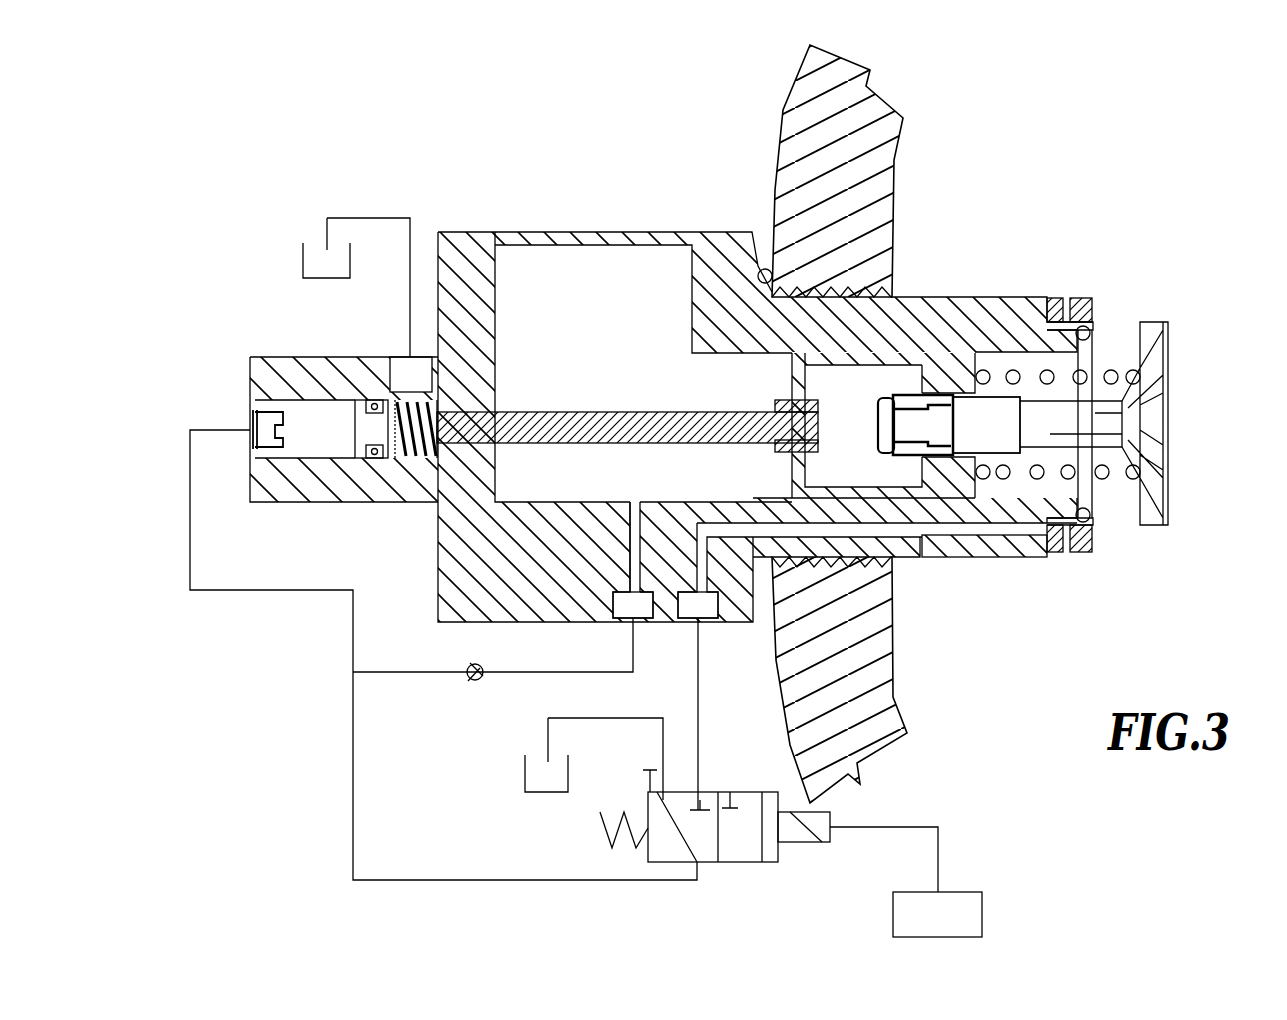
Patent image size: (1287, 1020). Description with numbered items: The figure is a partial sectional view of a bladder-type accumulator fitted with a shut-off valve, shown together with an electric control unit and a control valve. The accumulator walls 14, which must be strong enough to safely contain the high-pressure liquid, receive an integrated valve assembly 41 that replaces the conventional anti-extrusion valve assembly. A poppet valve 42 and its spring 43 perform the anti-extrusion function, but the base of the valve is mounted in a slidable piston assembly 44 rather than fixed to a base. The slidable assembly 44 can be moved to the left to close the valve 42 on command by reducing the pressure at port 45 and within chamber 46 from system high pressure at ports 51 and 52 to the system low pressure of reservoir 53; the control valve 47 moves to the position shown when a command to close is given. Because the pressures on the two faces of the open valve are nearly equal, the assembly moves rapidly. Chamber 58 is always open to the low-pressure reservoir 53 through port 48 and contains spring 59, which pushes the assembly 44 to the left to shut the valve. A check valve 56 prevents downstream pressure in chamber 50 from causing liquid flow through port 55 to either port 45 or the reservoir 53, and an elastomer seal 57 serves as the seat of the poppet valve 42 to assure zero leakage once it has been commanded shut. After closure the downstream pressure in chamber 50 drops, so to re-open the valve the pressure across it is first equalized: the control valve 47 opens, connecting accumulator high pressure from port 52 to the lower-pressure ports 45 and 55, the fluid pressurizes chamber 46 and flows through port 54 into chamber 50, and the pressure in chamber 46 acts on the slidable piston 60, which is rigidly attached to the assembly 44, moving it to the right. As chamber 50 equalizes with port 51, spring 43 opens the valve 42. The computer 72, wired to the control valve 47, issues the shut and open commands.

The accumulator walls 14 is at (776, 116).
The integrated valve assembly 41 is at (757, 232).
The poppet valve 42 is at (1160, 420).
The spring 43 is at (1113, 370).
The slidable piston assembly 44 is at (945, 352).
The port 45 is at (246, 424).
The chamber 46 is at (318, 408).
The control valve 47 is at (740, 790).
The port 48 is at (405, 380).
The chamber 50 is at (765, 427).
The port 51 is at (928, 560).
The port 52 is at (705, 612).
The reservoir 53 is at (303, 260).
The port 54 is at (640, 500).
The port 55 is at (628, 632).
The check valve 56 is at (480, 678).
The elastomer seal 57 is at (1090, 517).
The chamber 58 is at (442, 410).
The spring 59 is at (411, 460).
The slidable piston 60 is at (362, 446).
The computer 72 is at (937, 914).